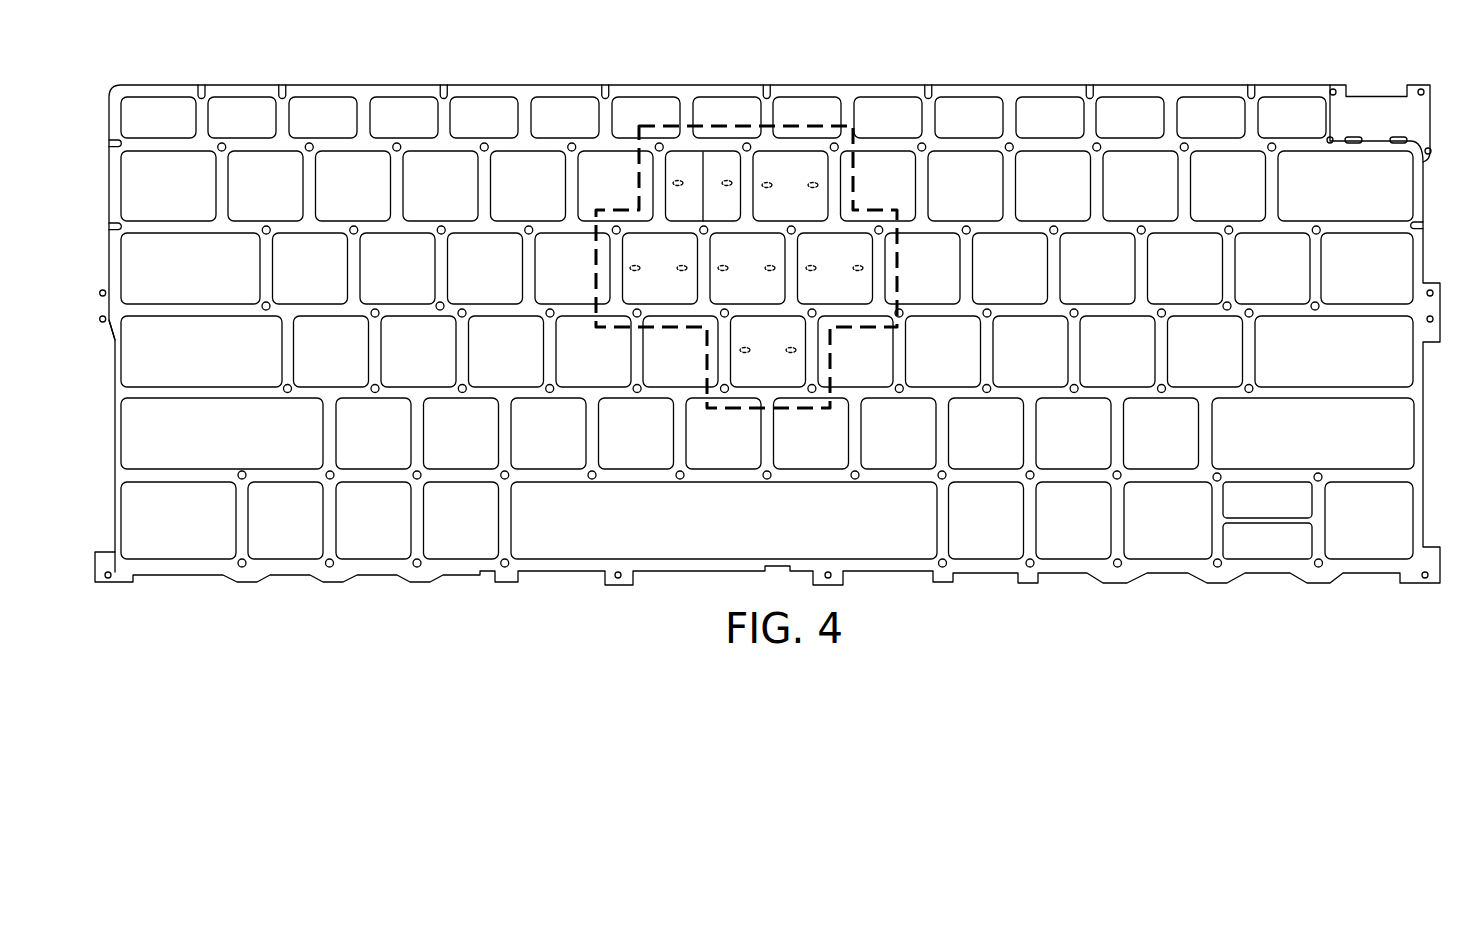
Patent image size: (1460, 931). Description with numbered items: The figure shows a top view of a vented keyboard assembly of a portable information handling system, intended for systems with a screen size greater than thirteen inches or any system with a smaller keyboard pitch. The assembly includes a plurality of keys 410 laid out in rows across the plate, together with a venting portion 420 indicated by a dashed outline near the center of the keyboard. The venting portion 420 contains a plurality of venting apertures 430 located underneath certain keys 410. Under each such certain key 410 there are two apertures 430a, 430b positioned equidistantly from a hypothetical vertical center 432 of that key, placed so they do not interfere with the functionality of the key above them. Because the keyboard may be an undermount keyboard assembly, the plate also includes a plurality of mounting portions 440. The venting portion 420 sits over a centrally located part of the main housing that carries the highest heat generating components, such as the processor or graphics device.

The keys 410 is at (789, 151).
The venting portion 420 is at (898, 203).
The venting apertures 430 is at (812, 428).
The aperture 430a is at (678, 180).
The aperture 430b is at (727, 180).
The hypothetical vertical center 432 is at (703, 212).
The mounting portions 440 is at (1009, 143).